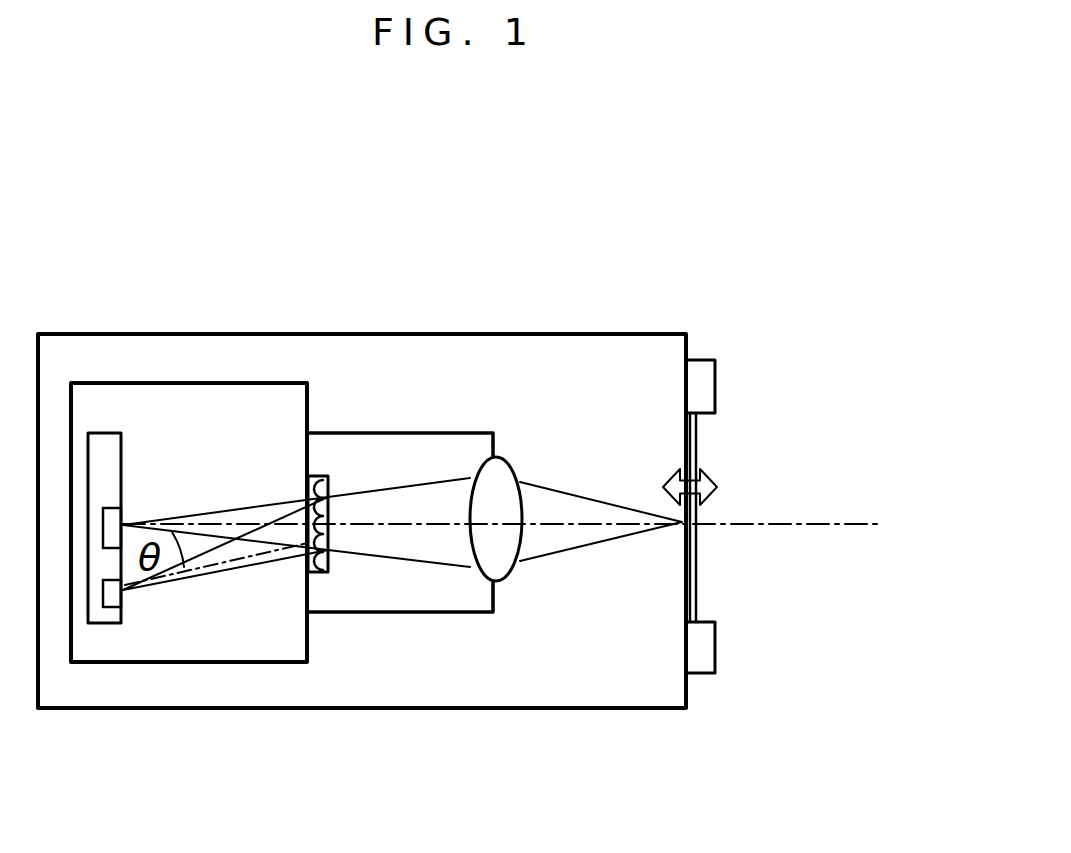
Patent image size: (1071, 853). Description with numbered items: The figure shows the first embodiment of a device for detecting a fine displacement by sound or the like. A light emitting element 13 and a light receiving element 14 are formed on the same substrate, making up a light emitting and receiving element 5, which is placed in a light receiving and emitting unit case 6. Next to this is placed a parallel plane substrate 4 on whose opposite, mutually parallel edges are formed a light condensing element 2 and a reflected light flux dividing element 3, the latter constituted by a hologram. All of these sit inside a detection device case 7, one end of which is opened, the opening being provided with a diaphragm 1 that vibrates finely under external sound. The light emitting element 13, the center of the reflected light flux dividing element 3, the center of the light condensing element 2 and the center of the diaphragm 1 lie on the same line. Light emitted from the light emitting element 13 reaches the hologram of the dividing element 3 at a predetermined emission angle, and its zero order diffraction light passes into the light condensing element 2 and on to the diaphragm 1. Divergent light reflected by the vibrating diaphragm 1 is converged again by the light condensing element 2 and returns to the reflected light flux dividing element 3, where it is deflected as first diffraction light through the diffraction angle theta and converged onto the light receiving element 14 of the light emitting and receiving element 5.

The diaphragm 1 is at (697, 445).
The light condensing element 2 is at (512, 467).
The reflected light flux dividing element 3 is at (320, 476).
The parallel plane substrate 4 is at (477, 613).
The light emitting and receiving element 5 is at (107, 445).
The light receiving and emitting unit case 6 is at (250, 663).
The detection device case 7 is at (393, 710).
The light emitting element 13 is at (124, 516).
The light receiving element 14 is at (108, 624).